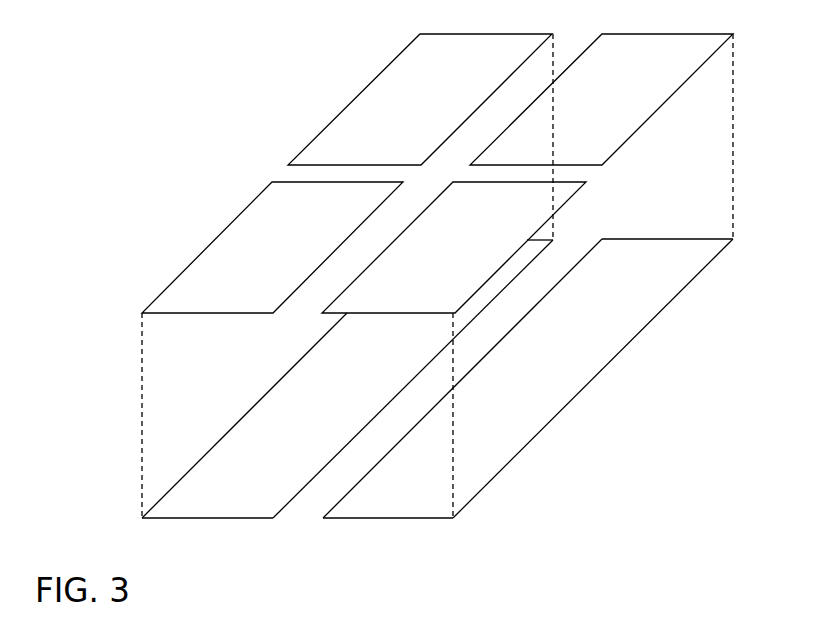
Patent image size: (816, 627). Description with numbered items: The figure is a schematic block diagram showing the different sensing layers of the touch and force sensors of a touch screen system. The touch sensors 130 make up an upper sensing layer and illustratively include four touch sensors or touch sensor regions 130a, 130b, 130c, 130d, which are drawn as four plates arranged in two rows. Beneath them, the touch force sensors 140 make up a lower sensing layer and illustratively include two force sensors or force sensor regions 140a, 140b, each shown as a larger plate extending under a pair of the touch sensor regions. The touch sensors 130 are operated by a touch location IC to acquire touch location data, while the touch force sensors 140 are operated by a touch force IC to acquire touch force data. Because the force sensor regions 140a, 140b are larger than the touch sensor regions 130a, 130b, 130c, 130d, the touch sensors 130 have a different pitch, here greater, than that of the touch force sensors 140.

The touch sensors 130 is at (244, 170).
The touch sensor region 130a is at (388, 65).
The touch sensor region 130b is at (206, 248).
The touch sensor region 130c is at (625, 143).
The touch sensor region 130d is at (569, 200).
The touch force sensors 140 is at (237, 369).
The force sensor region 140a is at (240, 419).
The force sensor region 140b is at (555, 419).